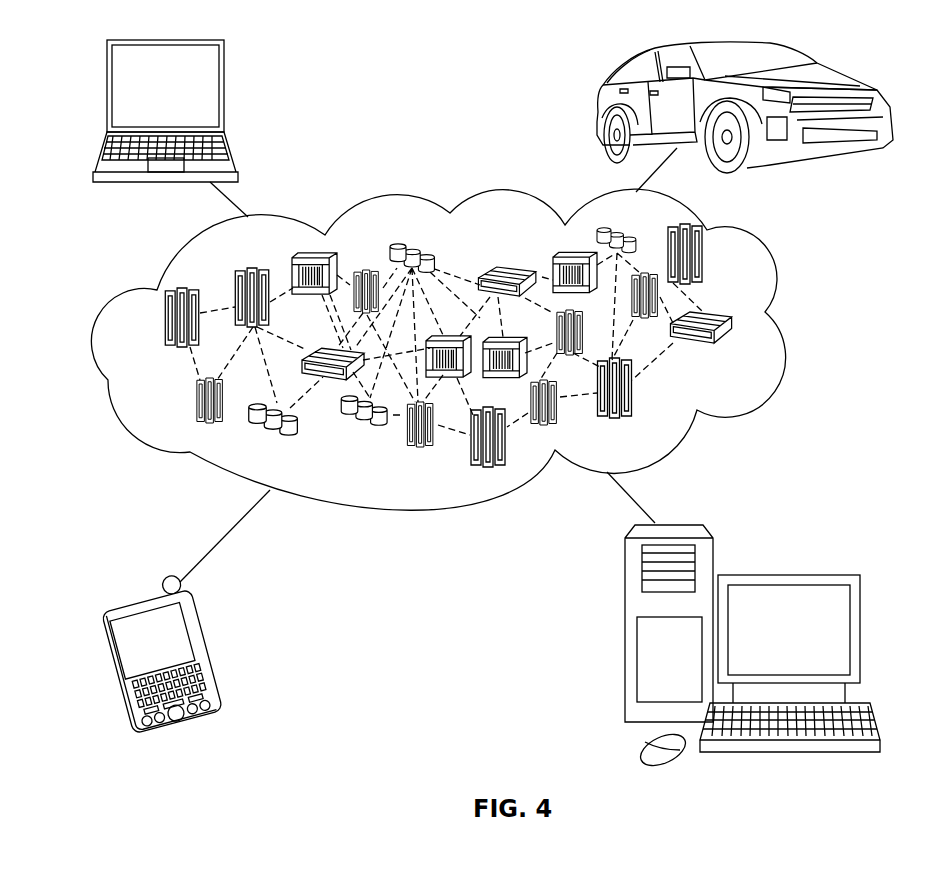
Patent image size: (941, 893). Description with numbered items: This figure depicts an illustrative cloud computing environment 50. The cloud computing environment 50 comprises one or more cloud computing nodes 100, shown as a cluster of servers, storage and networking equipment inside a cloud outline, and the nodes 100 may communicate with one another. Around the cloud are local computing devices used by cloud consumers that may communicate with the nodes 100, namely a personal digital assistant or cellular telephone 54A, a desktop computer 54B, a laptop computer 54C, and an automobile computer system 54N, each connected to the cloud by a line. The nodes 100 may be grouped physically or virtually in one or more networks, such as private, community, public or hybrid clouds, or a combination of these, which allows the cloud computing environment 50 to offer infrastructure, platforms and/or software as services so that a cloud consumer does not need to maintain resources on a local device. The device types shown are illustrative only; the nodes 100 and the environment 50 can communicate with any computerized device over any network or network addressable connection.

The cloud computing environment 50 is at (788, 328).
The cloud computing nodes 100 is at (742, 353).
The personal digital assistant (PDA) or cellular telephone 54A is at (213, 655).
The desktop computer 54B is at (787, 575).
The laptop computer 54C is at (224, 92).
The automobile computer system 54N is at (597, 107).